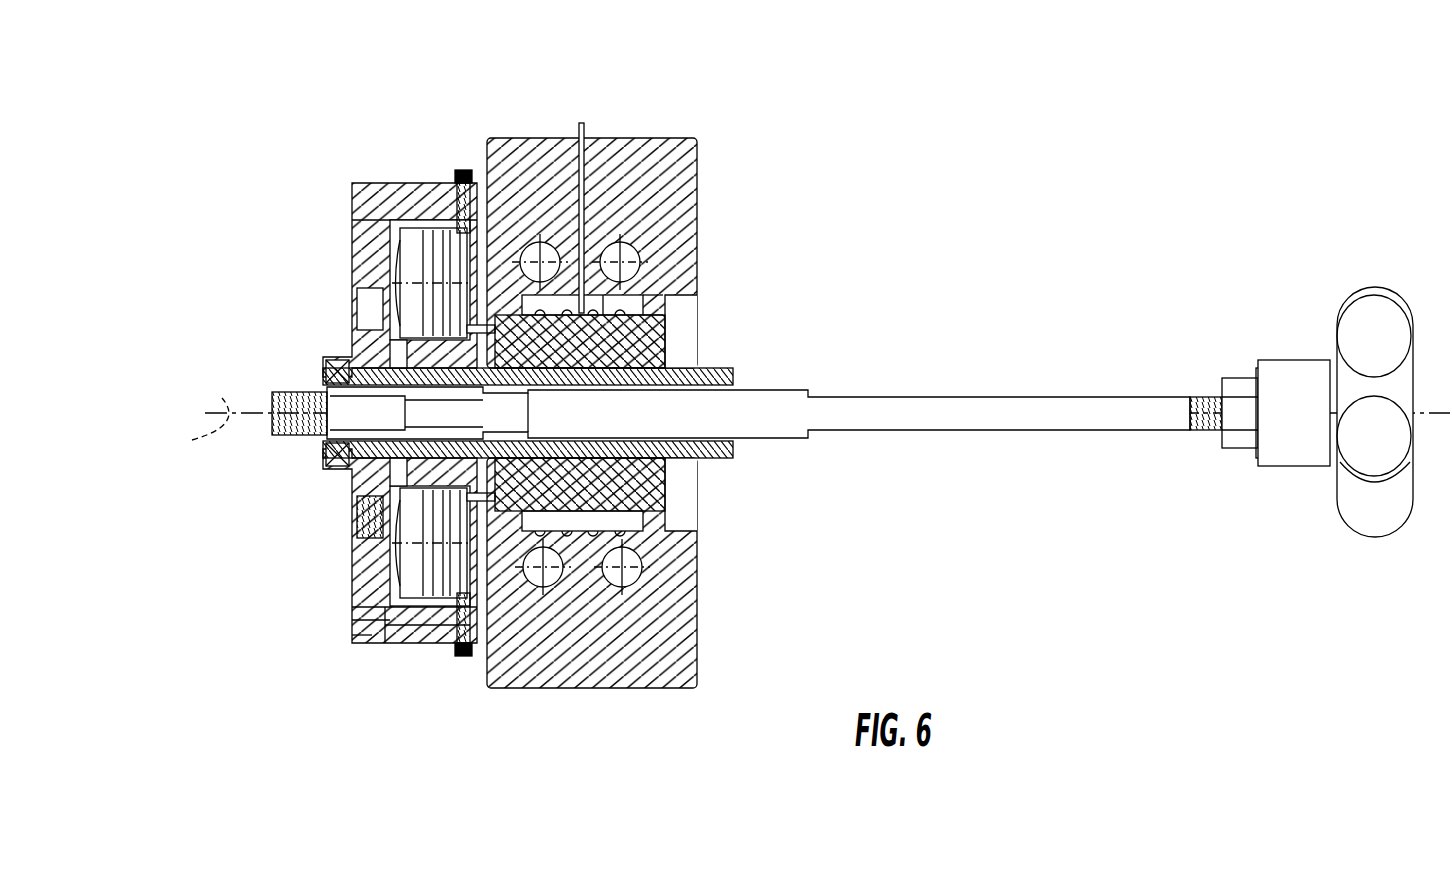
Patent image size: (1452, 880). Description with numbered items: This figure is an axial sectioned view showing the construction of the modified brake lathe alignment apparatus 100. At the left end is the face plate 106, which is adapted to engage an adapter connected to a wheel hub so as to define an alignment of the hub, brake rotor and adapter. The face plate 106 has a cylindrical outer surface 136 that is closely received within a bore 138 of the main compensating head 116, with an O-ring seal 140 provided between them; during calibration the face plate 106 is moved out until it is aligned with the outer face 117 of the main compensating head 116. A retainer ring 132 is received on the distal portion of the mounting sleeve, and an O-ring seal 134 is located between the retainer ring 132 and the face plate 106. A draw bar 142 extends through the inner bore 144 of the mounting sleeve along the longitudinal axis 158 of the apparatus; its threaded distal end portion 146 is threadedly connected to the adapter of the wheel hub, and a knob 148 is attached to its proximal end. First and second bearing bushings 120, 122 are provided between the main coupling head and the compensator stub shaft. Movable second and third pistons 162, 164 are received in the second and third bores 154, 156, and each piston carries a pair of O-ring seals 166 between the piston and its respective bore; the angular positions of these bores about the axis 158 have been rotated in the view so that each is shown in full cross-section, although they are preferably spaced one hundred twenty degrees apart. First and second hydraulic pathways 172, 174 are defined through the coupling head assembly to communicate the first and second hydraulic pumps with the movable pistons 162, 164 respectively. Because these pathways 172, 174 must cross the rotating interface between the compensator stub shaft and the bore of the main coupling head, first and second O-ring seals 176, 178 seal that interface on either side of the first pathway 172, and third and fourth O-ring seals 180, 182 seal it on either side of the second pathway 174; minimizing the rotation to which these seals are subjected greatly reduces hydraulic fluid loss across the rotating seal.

The brake lathe alignment apparatus 100 is at (740, 143).
The face plate 106 is at (350, 237).
The main compensating head 116 is at (420, 630).
The outer face 117 is at (352, 630).
The first bearing bushing 120 is at (510, 540).
The second bearing bushing 122 is at (655, 545).
The retainer ring 132 is at (323, 370).
The O-ring seal 134 is at (323, 478).
The cylindrical outer surface 136 is at (357, 647).
The bore 138 is at (355, 575).
The O-ring seal 140 is at (353, 630).
The draw bar 142 is at (795, 395).
The inner bore 144 is at (337, 438).
The threaded distal end portion 146 is at (325, 386).
The knob 148 is at (1363, 320).
The second bore 154 is at (395, 272).
The third bore 156 is at (380, 556).
The longitudinal axis 158 is at (205, 432).
The movable second piston 162 is at (407, 320).
The movable third piston 164 is at (413, 532).
The O-ring seals 166 is at (433, 232).
The first hydraulic pathway 172 is at (482, 215).
The second hydraulic pathway 174 is at (453, 653).
The first O-ring seal 176 is at (572, 300).
The second O-ring seal 178 is at (603, 305).
The third O-ring seal 180 is at (662, 228).
The fourth O-ring seal 182 is at (675, 260).